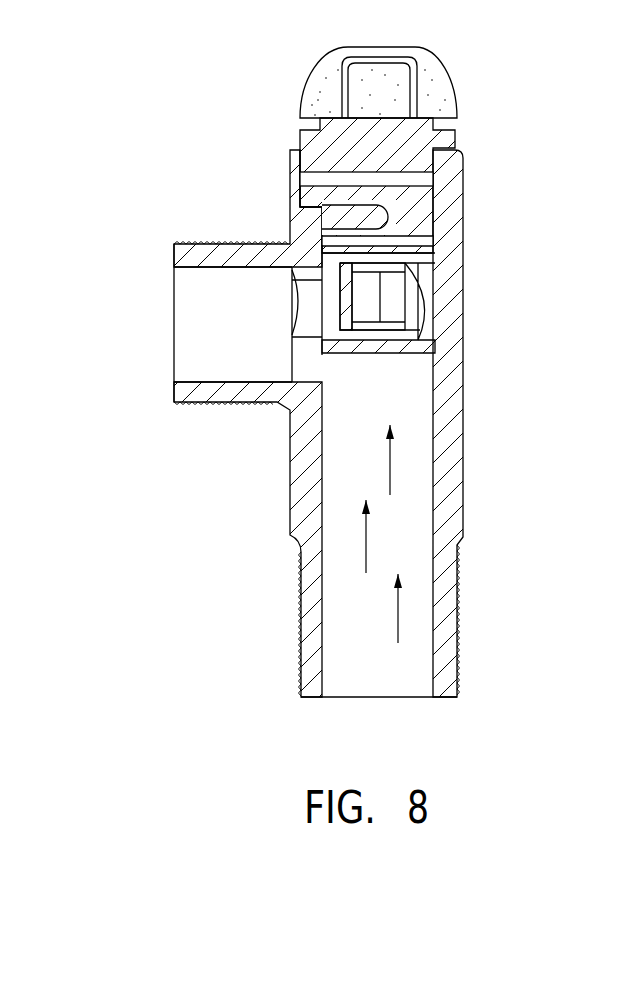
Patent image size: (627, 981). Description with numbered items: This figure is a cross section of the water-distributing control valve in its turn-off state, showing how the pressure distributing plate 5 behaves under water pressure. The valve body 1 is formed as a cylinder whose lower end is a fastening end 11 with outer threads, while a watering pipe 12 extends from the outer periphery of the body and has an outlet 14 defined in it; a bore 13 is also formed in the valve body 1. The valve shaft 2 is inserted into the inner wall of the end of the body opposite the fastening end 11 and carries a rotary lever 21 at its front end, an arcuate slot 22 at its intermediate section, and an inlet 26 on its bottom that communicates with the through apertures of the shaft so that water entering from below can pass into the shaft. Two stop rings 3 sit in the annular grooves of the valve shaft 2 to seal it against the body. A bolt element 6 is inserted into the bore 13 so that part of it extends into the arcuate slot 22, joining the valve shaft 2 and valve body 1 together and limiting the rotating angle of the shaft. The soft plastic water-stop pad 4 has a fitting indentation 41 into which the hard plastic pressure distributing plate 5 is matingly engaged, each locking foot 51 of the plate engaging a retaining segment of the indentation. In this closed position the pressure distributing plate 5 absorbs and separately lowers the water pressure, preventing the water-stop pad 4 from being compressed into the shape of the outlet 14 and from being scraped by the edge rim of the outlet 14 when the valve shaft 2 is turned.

The valve body 1 is at (463, 497).
The fastening end 11 is at (462, 650).
The watering pipe 12 is at (172, 398).
The bore 13 is at (292, 194).
The outlet 14 is at (305, 297).
The valve shaft 2 is at (297, 130).
The rotary lever 21 is at (443, 74).
The arcuate slot 22 is at (380, 215).
The inlet 26 is at (363, 307).
The stop rings 3 is at (312, 172).
The water-stop pad 4 is at (318, 336).
The pressure distributing plate 5 is at (356, 283).
The fitting indentation 41 is at (464, 298).
The locking foot 51 is at (354, 300).
The bolt element 6 is at (297, 217).